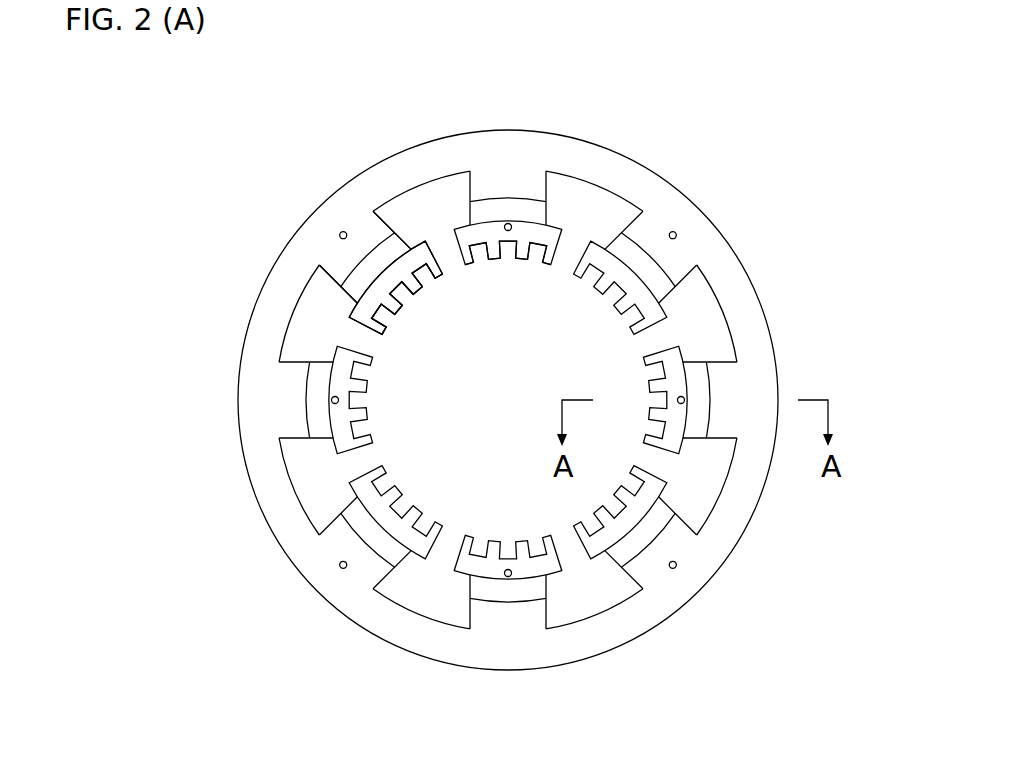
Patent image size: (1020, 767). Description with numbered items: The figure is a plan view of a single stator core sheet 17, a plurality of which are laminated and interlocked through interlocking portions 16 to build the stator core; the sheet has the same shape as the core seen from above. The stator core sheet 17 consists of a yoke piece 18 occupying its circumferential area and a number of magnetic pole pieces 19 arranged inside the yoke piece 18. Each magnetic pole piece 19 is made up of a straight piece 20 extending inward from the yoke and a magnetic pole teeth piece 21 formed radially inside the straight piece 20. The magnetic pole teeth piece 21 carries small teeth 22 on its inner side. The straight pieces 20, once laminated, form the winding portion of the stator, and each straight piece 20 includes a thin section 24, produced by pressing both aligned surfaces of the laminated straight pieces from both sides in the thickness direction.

The interlocking portion 16 is at (675, 569).
The stator core sheet 17 is at (697, 181).
The yoke piece 18 is at (730, 275).
The magnetic pole piece 19 is at (398, 221).
The straight piece 20 is at (513, 185).
The magnetic pole teeth piece 21 is at (530, 232).
The small teeth 22 is at (498, 253).
The thin section 24 is at (658, 277).